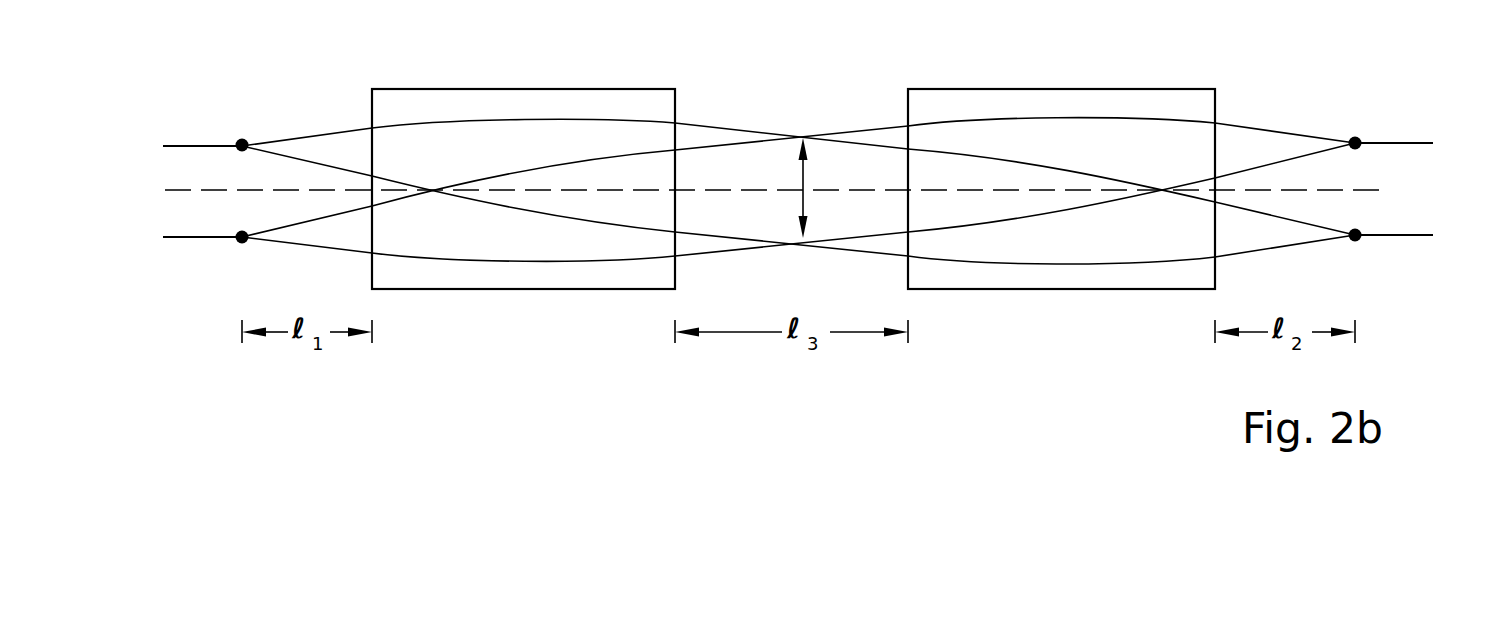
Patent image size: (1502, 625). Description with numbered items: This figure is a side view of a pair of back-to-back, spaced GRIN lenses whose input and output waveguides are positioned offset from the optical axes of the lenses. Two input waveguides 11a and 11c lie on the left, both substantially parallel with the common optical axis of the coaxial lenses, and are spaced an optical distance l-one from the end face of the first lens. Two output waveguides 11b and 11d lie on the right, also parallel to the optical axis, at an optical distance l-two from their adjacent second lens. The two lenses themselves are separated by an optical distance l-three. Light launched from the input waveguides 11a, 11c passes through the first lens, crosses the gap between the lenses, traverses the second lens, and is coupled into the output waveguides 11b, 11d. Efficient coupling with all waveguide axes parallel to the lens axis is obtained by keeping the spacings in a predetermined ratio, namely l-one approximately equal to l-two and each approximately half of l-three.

The input waveguide 11a is at (245, 138).
The output waveguide 11b is at (1360, 241).
The input waveguide 11c is at (238, 243).
The output waveguide 11d is at (1359, 137).